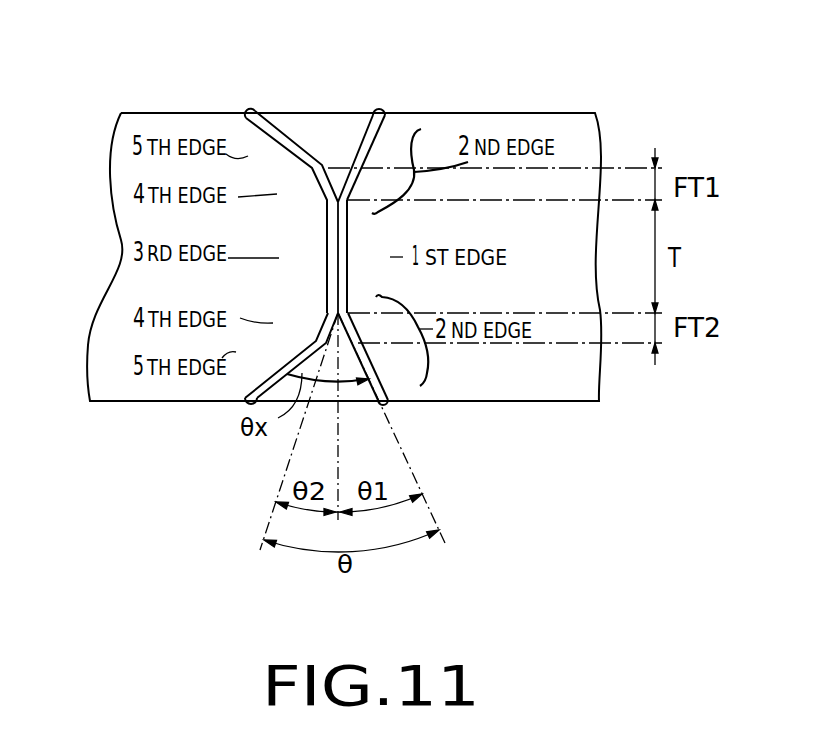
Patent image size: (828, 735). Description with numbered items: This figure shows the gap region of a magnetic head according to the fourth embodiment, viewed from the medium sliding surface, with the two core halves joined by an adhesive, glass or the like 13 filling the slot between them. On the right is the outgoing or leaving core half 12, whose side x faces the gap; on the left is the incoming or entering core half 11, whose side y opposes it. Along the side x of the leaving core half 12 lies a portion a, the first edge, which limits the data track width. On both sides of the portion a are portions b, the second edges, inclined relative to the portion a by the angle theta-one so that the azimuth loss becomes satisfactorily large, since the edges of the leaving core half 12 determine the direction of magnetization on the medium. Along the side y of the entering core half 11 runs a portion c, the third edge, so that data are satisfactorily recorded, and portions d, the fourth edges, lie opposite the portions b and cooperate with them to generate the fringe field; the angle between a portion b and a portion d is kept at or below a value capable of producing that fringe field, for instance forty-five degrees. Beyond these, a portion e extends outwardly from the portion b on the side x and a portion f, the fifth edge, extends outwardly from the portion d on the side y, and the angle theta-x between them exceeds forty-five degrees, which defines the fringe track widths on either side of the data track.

The incoming or entering core half 11 is at (162, 390).
The outgoing or leaving core half 12 is at (531, 392).
The adhesive, glass or the like 13 is at (318, 122).
The first edge a is at (348, 241).
The second edges b is at (356, 165).
The third edge c is at (330, 241).
The fourth edges d is at (316, 170).
The portion extended outwardly from the portion b e is at (379, 146).
The fifth edge f is at (279, 152).
The side of the medium sliding surface of the leaving core half x is at (362, 112).
The side of the opposing surface of the entering core half y is at (270, 120).